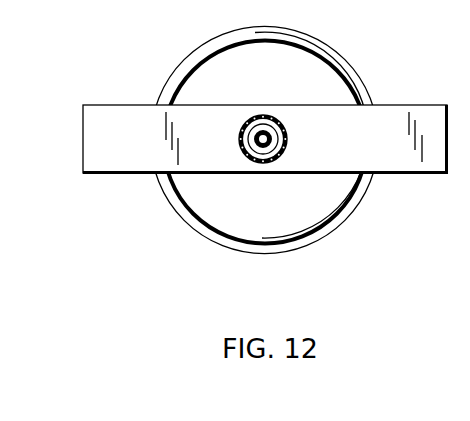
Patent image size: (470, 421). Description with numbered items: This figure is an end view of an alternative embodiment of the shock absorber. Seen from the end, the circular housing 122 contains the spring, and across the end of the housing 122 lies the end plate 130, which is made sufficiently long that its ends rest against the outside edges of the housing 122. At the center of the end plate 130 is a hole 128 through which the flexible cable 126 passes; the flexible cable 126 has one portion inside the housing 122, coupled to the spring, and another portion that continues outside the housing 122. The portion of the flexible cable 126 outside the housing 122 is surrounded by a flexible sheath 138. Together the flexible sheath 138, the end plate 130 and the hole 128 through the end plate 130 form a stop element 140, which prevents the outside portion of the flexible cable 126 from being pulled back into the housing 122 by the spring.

The housing 122 is at (320, 48).
The flexible cable 126 is at (270, 143).
The hole 128 is at (257, 114).
The end plate 130 is at (382, 135).
The flexible sheath 138 is at (240, 134).
The stop element 140 is at (239, 154).